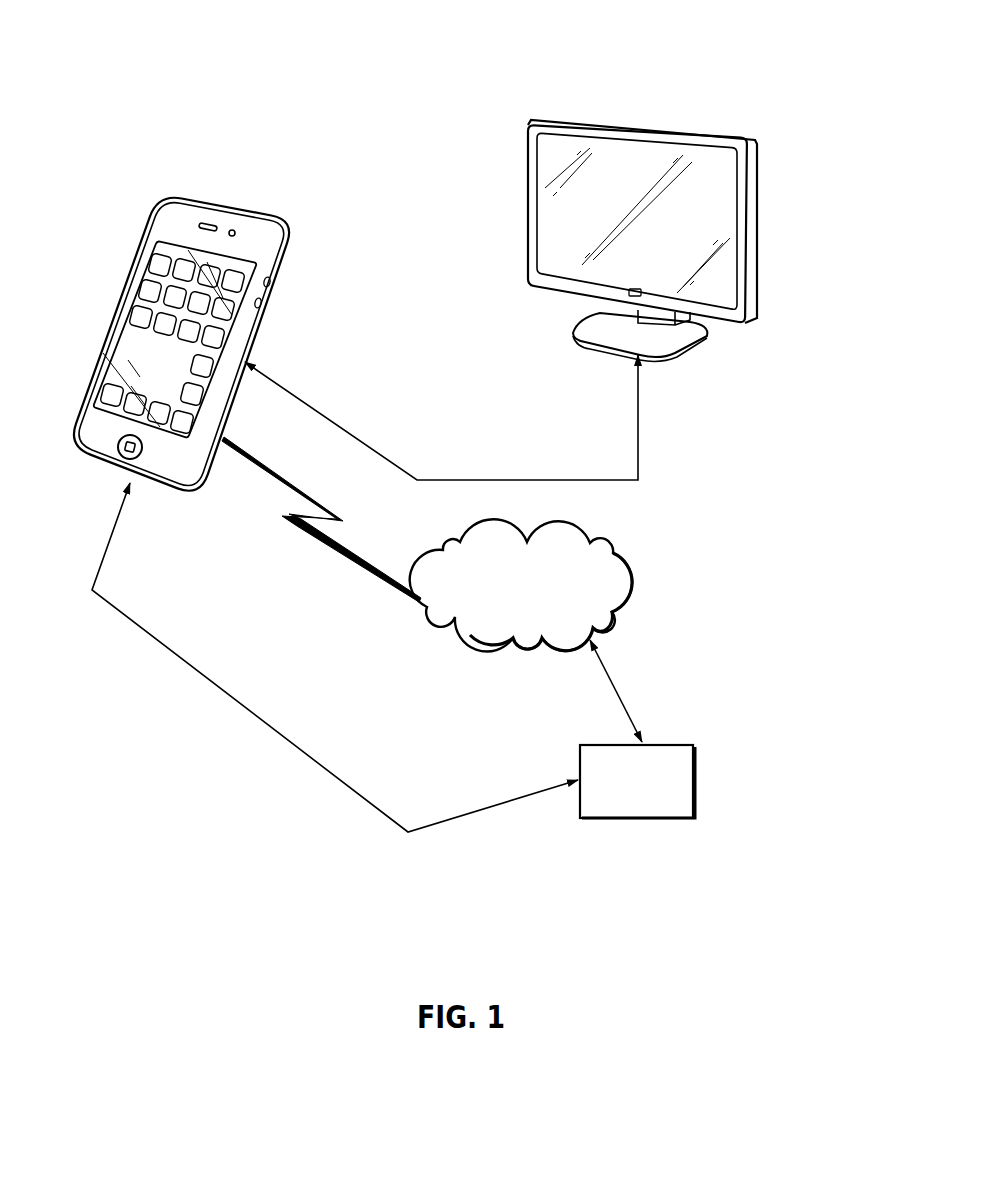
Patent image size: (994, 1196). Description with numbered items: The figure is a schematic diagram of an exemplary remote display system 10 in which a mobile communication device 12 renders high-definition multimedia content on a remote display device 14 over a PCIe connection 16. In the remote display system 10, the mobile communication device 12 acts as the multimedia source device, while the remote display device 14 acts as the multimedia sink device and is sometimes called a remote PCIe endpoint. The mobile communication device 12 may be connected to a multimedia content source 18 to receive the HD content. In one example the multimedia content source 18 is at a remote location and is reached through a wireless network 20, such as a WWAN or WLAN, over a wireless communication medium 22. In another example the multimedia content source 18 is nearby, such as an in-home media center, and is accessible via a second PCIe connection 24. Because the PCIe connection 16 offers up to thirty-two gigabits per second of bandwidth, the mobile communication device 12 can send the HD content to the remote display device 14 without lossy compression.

The remote display system 10 is at (747, 108).
The mobile communication device 12 is at (223, 200).
The remote display device 14 is at (755, 227).
The PCIe connection 16 is at (638, 425).
The multimedia content source 18 is at (693, 782).
The wireless network 20 is at (637, 583).
The wireless communication medium 22 is at (318, 537).
The second PCIe connection 24 is at (230, 697).